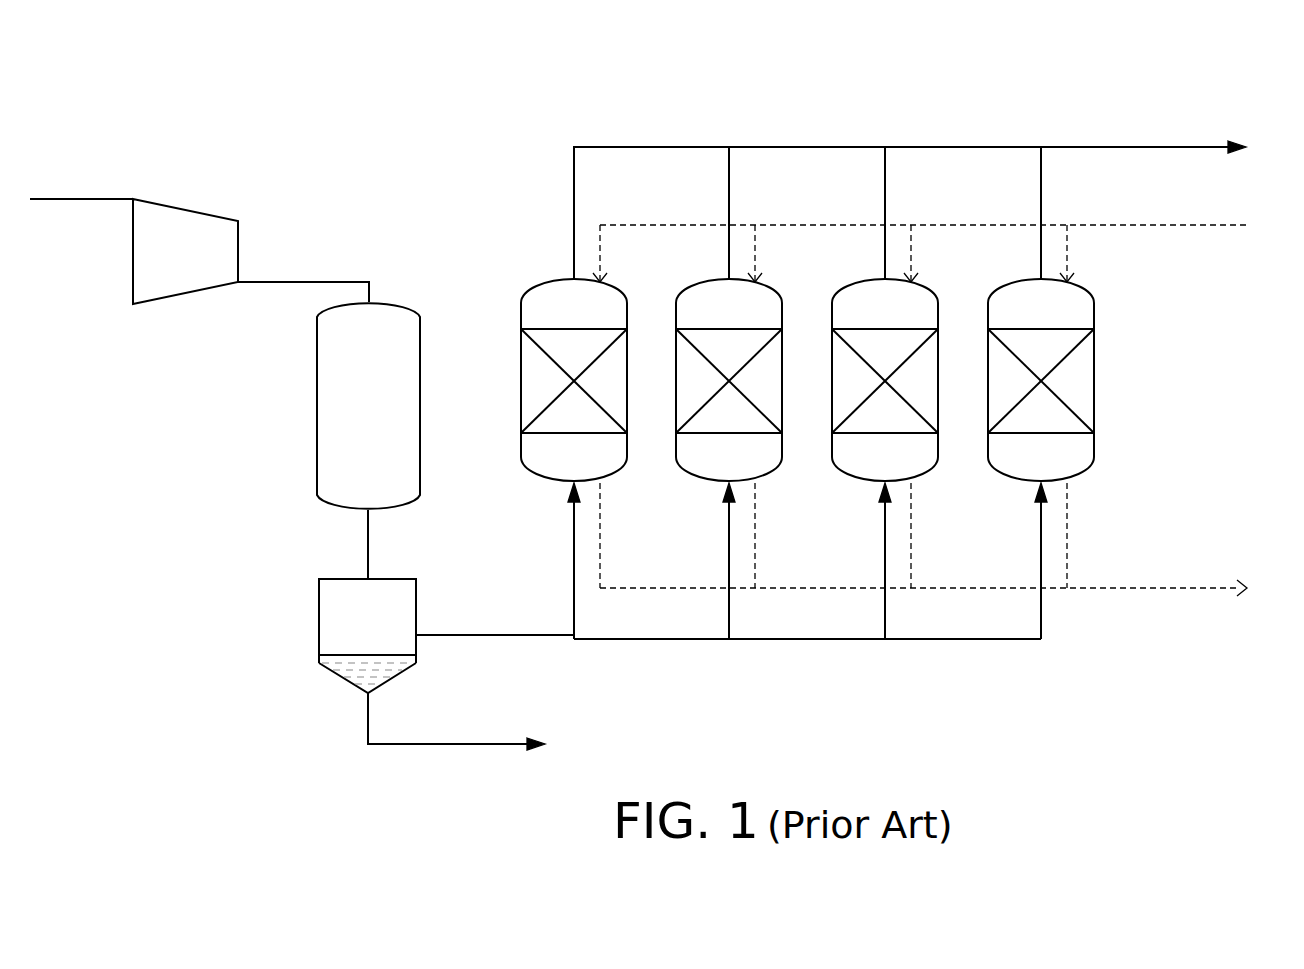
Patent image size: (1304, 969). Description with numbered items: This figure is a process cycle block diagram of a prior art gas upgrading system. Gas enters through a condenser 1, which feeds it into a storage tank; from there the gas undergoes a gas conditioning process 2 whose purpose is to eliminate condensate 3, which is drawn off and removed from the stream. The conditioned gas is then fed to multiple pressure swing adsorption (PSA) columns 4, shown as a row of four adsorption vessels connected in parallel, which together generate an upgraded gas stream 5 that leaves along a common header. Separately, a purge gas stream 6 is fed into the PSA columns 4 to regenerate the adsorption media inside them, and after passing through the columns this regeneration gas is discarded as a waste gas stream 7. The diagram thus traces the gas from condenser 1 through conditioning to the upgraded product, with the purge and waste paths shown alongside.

The condenser 1 is at (186, 294).
The gas conditioning process 2 is at (319, 624).
The condensate 3 is at (507, 744).
The pressure swing adsorption (PSA) columns 4 is at (558, 457).
The upgraded gas stream 5 is at (1208, 147).
The purge gas stream 6 is at (1208, 225).
The waste gas stream 7 is at (1208, 588).